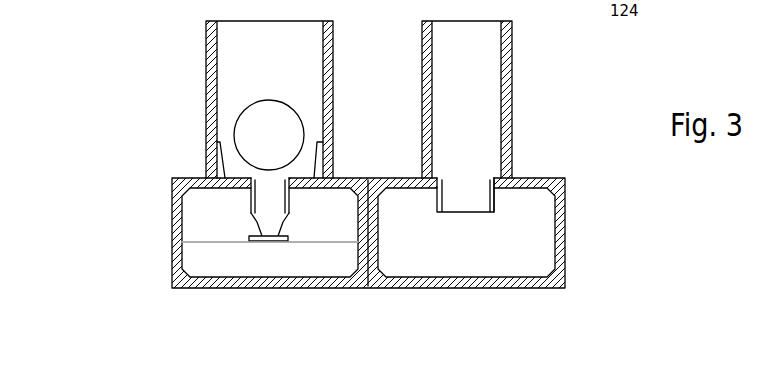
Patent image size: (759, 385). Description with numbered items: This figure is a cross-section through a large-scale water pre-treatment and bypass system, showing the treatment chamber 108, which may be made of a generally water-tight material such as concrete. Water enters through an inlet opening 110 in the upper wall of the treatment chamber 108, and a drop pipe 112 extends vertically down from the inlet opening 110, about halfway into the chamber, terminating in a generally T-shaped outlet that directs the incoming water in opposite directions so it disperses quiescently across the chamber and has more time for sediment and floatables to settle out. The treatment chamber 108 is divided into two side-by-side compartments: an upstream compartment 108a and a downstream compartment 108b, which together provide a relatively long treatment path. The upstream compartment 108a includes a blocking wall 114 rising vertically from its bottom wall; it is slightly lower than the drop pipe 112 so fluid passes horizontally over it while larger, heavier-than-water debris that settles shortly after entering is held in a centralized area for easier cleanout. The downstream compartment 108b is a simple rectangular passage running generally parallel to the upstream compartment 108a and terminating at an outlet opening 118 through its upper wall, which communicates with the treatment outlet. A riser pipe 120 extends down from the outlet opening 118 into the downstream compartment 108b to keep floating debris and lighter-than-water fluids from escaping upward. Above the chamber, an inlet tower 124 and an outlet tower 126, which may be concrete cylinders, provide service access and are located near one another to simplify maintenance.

The treatment chamber 108 is at (392, 288).
The upstream compartment 108a is at (270, 232).
The downstream compartment 108b is at (466, 232).
The inlet opening 110 is at (270, 187).
The drop pipe 112 is at (255, 201).
The blocking wall 114 is at (200, 260).
The outlet opening 118 is at (473, 188).
The riser pipe 120 is at (497, 203).
The inlet tower 124 is at (330, 72).
The outlet tower 126 is at (510, 75).